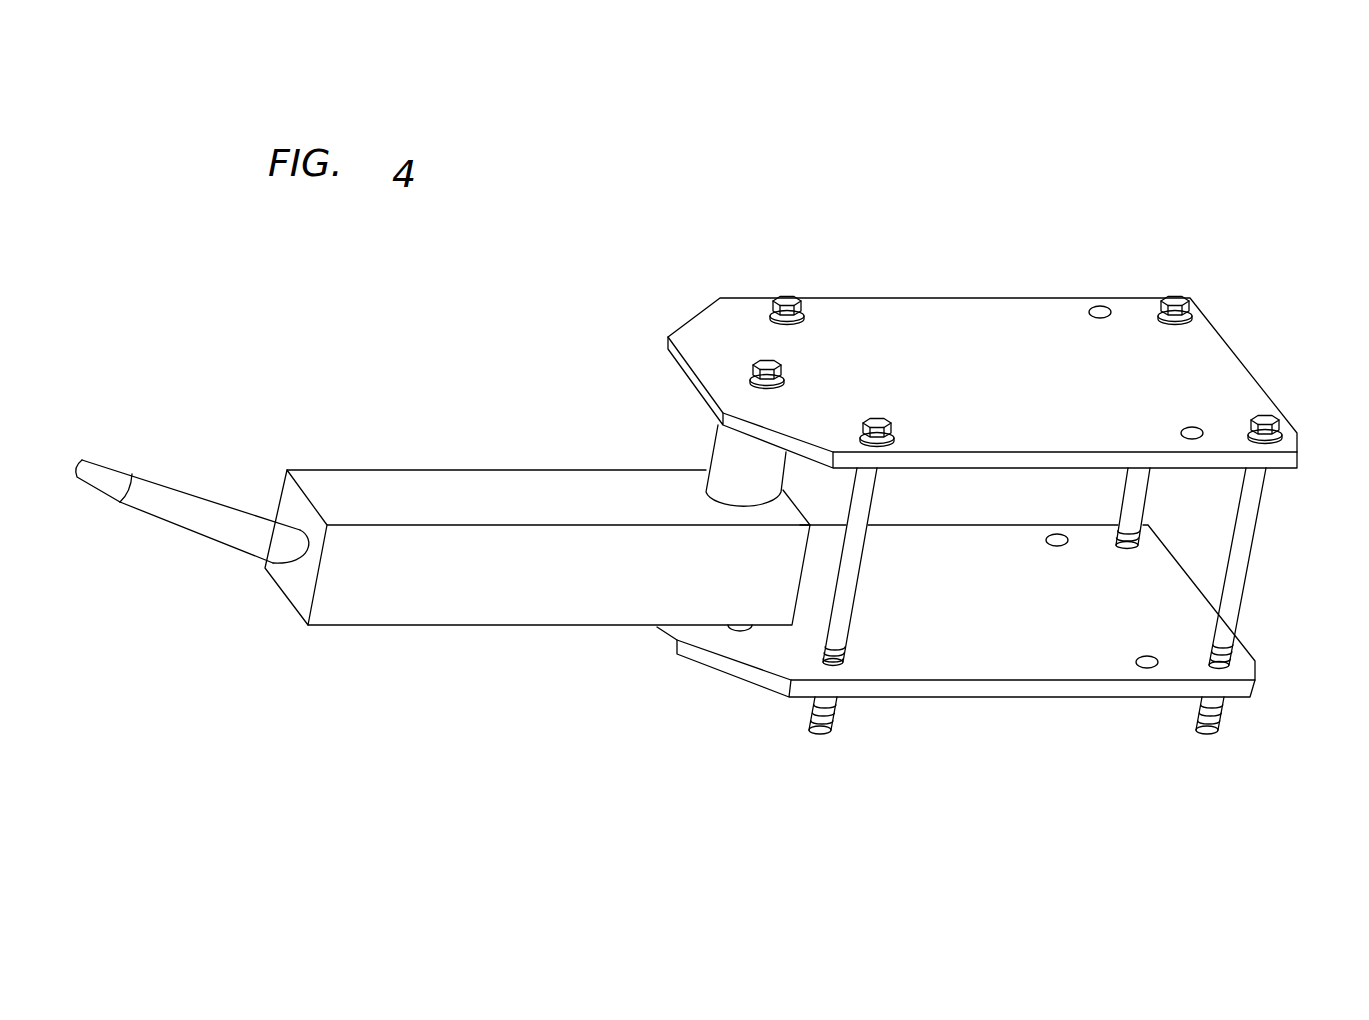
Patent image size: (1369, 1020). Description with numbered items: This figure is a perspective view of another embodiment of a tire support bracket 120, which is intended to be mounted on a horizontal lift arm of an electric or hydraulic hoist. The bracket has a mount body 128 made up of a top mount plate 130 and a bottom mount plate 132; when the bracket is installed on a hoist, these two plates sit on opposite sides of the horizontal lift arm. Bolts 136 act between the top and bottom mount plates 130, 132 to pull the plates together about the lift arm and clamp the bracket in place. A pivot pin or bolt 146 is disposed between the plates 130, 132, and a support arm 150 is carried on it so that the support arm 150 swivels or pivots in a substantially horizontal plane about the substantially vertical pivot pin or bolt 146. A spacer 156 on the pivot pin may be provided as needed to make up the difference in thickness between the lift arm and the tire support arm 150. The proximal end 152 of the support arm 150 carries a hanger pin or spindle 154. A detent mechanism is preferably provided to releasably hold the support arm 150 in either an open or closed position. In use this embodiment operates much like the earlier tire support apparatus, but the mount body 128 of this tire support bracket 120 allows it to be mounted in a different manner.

The tire support bracket 120 is at (841, 127).
The mount body 128 is at (1139, 270).
The top mount plate 130 is at (1022, 308).
The bottom mount plate 132 is at (978, 688).
The bolts 136 is at (1175, 300).
The pivot pin or bolt 146 is at (767, 355).
The support arm 150 is at (425, 627).
The proximal end 152 is at (302, 583).
The hanger pin or spindle 154 is at (160, 505).
The spacer 156 is at (728, 468).